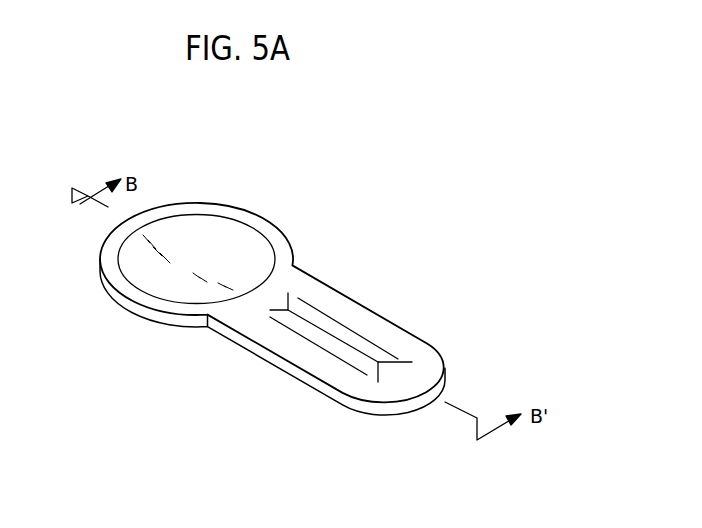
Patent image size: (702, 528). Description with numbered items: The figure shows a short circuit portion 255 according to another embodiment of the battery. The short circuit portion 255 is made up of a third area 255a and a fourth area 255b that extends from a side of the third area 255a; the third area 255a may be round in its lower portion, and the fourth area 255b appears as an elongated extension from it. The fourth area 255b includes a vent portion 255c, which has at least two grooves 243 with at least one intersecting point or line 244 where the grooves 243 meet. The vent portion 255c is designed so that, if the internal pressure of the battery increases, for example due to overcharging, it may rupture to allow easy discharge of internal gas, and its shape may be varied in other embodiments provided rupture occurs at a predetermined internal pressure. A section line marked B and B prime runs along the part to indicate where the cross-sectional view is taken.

The short circuit portion 255 is at (283, 192).
The third area 255a is at (197, 247).
The fourth area 255b is at (267, 336).
The vent portion 255c is at (378, 355).
The grooves 243 is at (288, 293).
The intersecting point or line 244 is at (337, 336).